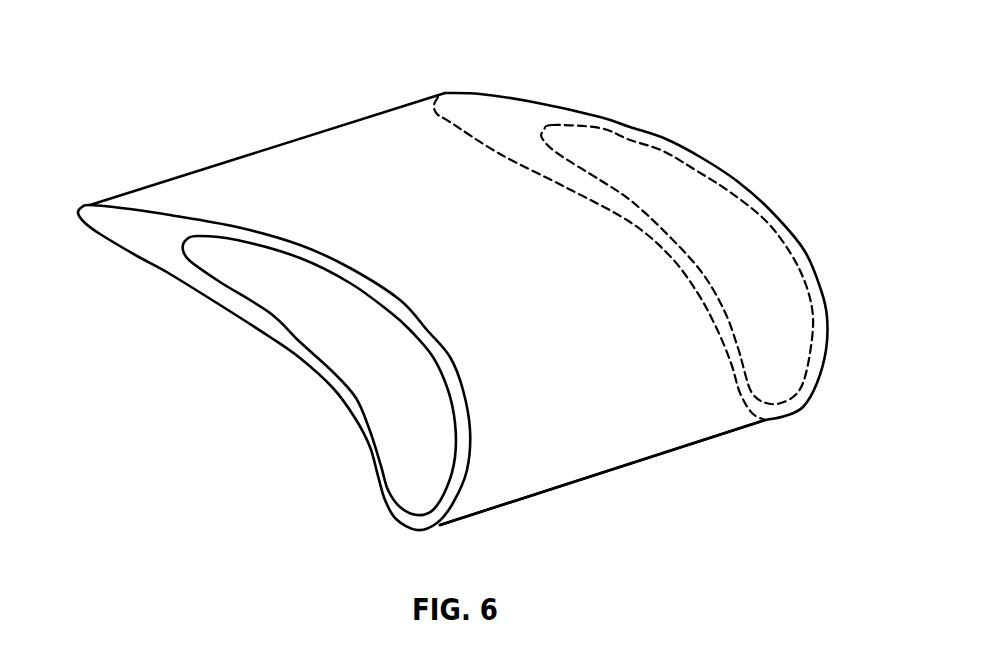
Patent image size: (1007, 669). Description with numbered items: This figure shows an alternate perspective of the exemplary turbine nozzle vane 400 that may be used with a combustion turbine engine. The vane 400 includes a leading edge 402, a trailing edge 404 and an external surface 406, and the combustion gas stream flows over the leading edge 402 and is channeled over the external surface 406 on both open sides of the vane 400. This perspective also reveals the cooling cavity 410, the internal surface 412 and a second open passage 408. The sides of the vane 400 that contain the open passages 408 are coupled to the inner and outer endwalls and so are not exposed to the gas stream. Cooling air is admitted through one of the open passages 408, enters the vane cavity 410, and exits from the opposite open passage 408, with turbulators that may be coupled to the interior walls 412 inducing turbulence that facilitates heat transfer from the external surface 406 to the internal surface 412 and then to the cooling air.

The turbine nozzle vane 400 is at (775, 84).
The leading edge 402 is at (663, 453).
The trailing edge 404 is at (124, 195).
The external surface 406 is at (410, 275).
The cooling air open passage 408 is at (415, 448).
The cooling cavity 410 is at (606, 327).
The internal surface 412 is at (503, 112).